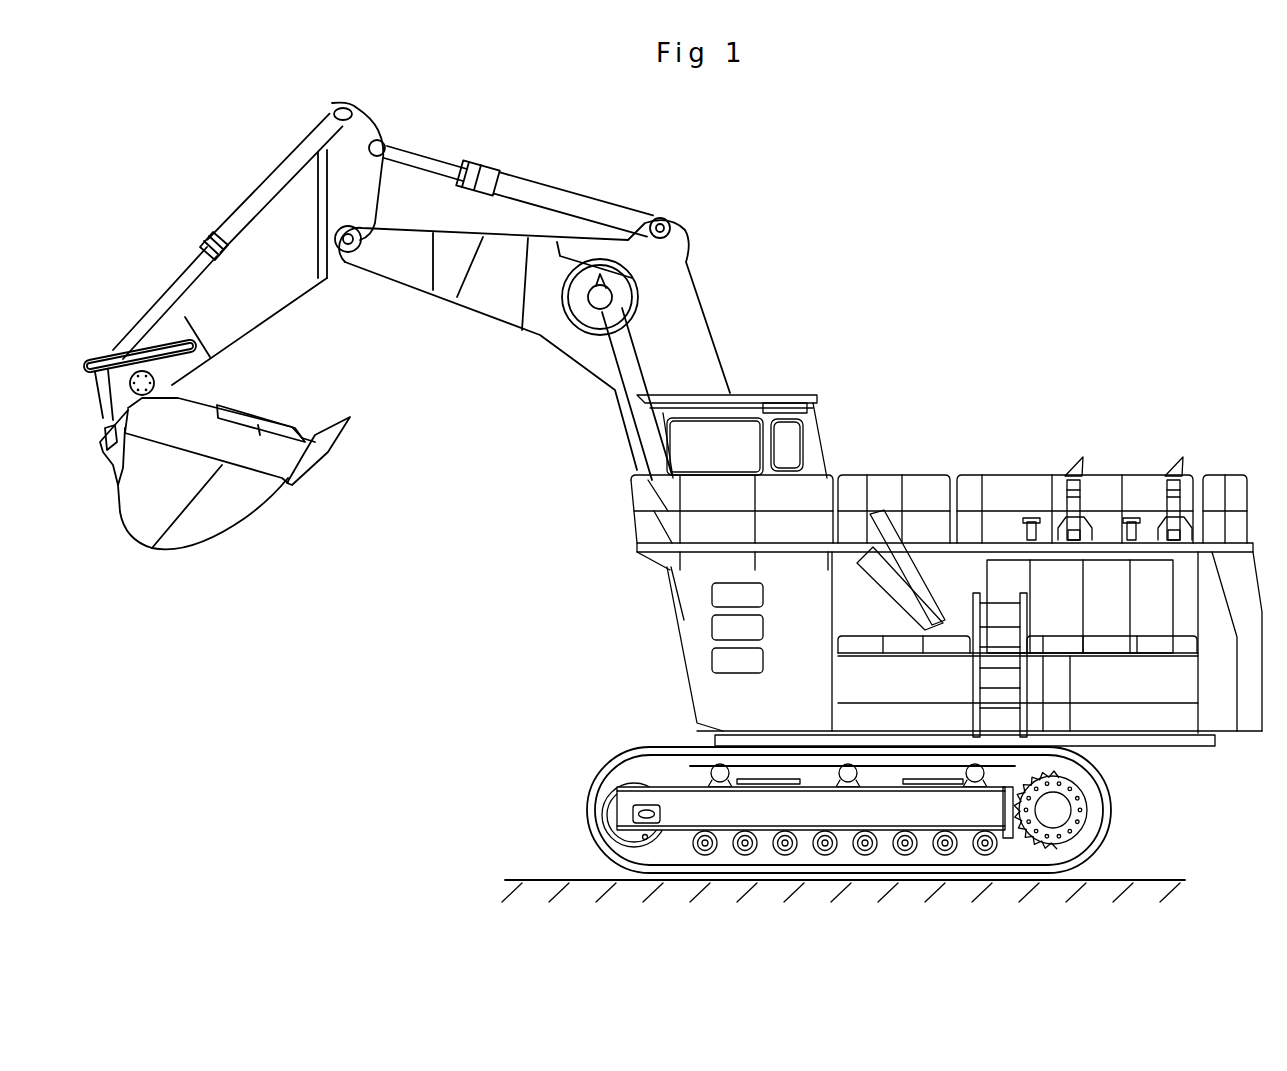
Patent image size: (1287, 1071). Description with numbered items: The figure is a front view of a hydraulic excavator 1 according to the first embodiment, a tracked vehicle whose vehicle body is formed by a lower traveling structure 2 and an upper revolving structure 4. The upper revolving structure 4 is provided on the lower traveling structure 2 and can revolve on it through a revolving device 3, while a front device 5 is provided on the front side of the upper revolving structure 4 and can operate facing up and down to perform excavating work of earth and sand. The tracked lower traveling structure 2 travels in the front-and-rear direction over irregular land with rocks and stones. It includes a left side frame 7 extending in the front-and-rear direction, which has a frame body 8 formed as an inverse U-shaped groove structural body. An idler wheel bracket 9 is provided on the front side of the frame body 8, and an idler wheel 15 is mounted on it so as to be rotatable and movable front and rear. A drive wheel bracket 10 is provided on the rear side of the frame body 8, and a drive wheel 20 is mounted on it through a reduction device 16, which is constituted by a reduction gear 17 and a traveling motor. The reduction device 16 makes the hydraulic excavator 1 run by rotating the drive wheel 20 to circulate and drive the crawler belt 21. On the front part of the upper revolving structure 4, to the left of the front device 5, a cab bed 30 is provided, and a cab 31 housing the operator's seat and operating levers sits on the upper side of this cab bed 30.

The hydraulic excavator 1 is at (673, 519).
The lower traveling structure 2 is at (853, 811).
The revolving device 3 is at (940, 741).
The upper revolving structure 4 is at (922, 525).
The front device 5 is at (566, 182).
The left side frame 7 is at (801, 852).
The frame body 8 is at (848, 812).
The idler wheel bracket 9 is at (632, 800).
The drive wheel bracket 10 is at (1007, 840).
The idler wheel 15 is at (612, 822).
The reduction device 16 is at (1104, 853).
The reduction gear 17 is at (1065, 820).
The drive wheel 20 is at (1025, 848).
The crawler belt 21 is at (1100, 845).
The cab bed 30 is at (697, 620).
The cab 31 is at (752, 402).